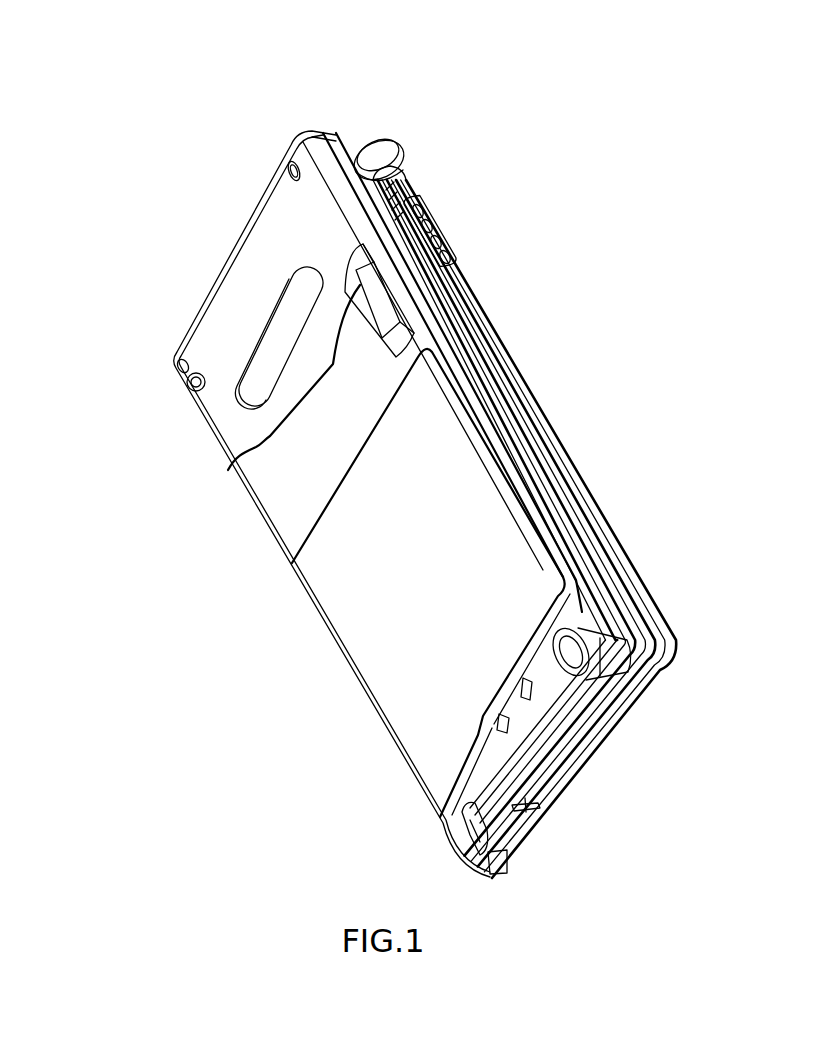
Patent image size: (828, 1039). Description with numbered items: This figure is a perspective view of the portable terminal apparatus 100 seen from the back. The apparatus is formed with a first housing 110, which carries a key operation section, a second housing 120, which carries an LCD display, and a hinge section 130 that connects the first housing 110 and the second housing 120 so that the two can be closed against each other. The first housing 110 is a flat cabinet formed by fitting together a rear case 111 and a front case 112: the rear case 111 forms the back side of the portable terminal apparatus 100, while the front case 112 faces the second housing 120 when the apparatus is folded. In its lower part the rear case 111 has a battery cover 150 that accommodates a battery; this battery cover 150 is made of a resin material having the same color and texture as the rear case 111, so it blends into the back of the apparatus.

The portable terminal apparatus 100 is at (371, 464).
The first housing 110 is at (524, 522).
The rear case 111 is at (448, 334).
The front case 112 is at (470, 378).
The second housing 120 is at (461, 275).
The hinge section 130 is at (386, 152).
The battery cover 150 is at (539, 560).